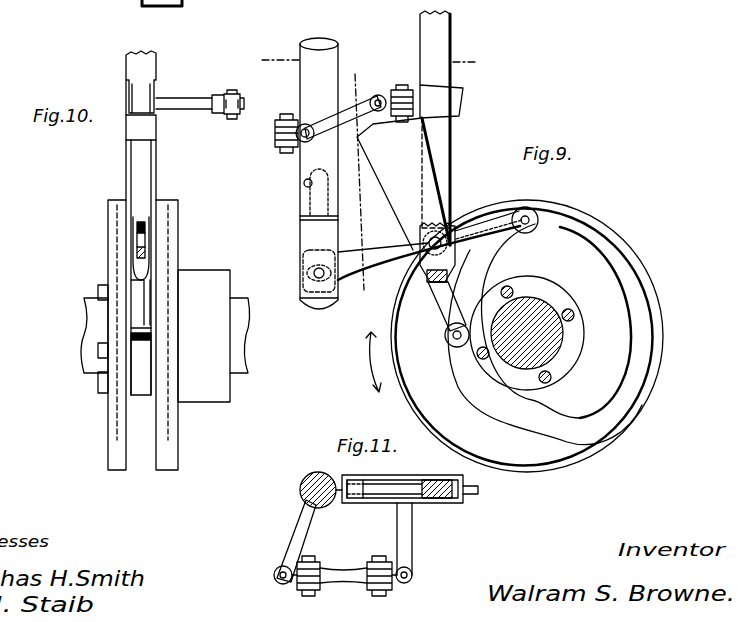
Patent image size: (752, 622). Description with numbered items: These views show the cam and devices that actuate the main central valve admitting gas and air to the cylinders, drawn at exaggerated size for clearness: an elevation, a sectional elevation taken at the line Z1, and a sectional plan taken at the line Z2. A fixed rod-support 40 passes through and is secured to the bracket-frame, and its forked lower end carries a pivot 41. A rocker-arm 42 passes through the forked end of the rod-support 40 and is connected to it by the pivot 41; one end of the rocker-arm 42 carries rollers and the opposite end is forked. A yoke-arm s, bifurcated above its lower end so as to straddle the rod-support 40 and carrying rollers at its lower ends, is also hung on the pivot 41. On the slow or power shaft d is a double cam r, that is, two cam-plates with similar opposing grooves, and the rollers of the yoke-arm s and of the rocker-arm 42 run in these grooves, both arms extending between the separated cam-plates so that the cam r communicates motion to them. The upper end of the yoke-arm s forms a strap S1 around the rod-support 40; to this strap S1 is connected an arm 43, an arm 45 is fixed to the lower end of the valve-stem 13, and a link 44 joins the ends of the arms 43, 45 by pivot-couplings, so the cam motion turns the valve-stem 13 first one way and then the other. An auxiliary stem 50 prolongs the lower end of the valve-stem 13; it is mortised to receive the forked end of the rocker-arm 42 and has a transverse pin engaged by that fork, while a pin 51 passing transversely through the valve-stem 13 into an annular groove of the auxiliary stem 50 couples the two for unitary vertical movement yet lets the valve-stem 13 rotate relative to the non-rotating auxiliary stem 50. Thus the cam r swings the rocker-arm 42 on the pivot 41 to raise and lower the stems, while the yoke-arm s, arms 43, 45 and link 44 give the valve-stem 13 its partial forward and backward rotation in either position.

In FIG. 9, the valve-stem 13 is at (300, 78).
In FIG. 11, the valve-stem 13 is at (313, 473).
In FIG. 10, the fixed rod-support 40 is at (150, 67).
In FIG. 9, the fixed rod-support 40 is at (441, 39).
In FIG. 11, the fixed rod-support 40 is at (438, 480).
In FIG. 10, the pivot 41 is at (143, 234).
In FIG. 9, the pivot 41 is at (456, 228).
In FIG. 10, the rocker-arm 42 is at (133, 262).
In FIG. 9, the rocker-arm 42 is at (386, 256).
In FIG. 11, the rocker-arm 42 is at (342, 479).
In FIG. 10, the arm 43 is at (183, 98).
In FIG. 9, the arm 43 is at (402, 92).
In FIG. 11, the arm 43 is at (413, 537).
In FIG. 10, the link 44 is at (223, 117).
In FIG. 9, the link 44 is at (330, 120).
In FIG. 11, the link 44 is at (358, 569).
In FIG. 9, the arm 45 is at (284, 143).
In FIG. 11, the arm 45 is at (296, 528).
In FIG. 9, the auxiliary stem 50 is at (300, 235).
In FIG. 9, the pin 51 is at (304, 186).
In FIG. 10, the strap S1 is at (135, 128).
In FIG. 9, the strap S1 is at (441, 102).
In FIG. 11, the strap S1 is at (358, 503).
In FIG. 10, the yoke-arm s is at (155, 184).
In FIG. 9, the yoke-arm s is at (407, 163).
In FIG. 10, the double cam r is at (108, 241).
In FIG. 9, the double cam r is at (636, 251).
In FIG. 10, the slow or power shaft d is at (88, 333).
In FIG. 9, the slow or power shaft d is at (534, 306).
In FIG. 9, the section line z' z' Z1 is at (360, 181).
In FIG. 9, the section line z² z² Z2 is at (371, 58).